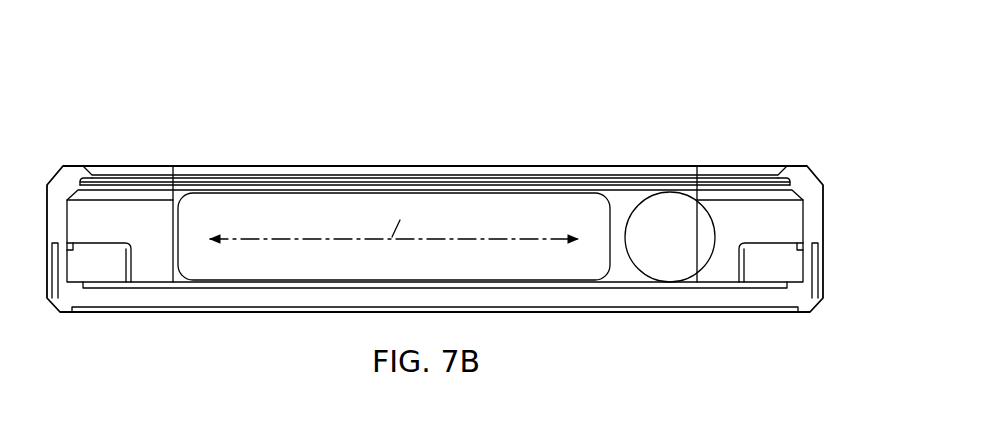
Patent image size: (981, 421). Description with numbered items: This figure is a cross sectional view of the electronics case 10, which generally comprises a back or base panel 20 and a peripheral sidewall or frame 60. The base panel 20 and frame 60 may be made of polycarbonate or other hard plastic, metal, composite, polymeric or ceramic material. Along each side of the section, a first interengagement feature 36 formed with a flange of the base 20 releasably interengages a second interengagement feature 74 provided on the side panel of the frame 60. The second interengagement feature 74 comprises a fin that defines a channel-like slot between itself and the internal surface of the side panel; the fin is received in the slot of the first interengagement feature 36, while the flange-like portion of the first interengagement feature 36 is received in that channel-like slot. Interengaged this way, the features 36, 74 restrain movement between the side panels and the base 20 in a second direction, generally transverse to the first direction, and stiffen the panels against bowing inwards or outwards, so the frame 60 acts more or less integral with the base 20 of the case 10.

The case 10 is at (103, 109).
The base panel 20 is at (274, 321).
The first interengagement feature 36 is at (75, 263).
The frame 60 is at (798, 161).
The second interengagement feature 74 is at (41, 251).